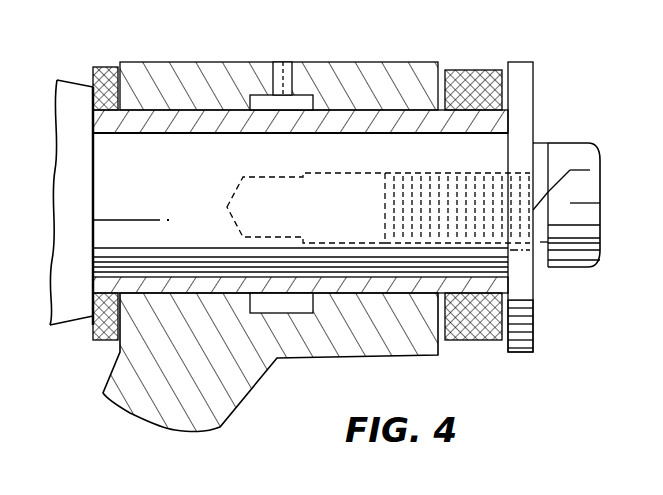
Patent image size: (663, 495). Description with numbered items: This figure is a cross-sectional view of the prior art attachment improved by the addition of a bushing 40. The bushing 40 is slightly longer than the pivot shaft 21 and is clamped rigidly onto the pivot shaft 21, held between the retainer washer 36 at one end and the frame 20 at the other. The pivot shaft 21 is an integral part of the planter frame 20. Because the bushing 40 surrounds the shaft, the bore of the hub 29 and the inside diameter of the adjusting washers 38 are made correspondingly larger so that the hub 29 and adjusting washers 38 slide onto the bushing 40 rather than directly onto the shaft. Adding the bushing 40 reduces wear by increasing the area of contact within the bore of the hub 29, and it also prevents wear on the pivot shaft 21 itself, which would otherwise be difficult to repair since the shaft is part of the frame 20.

The frame 20 is at (73, 97).
The pivot shaft 21 is at (480, 150).
The hub 29 is at (183, 62).
The retainer washer 36 is at (522, 65).
The adjusting washers 38 is at (482, 72).
The bushing 40 is at (348, 120).